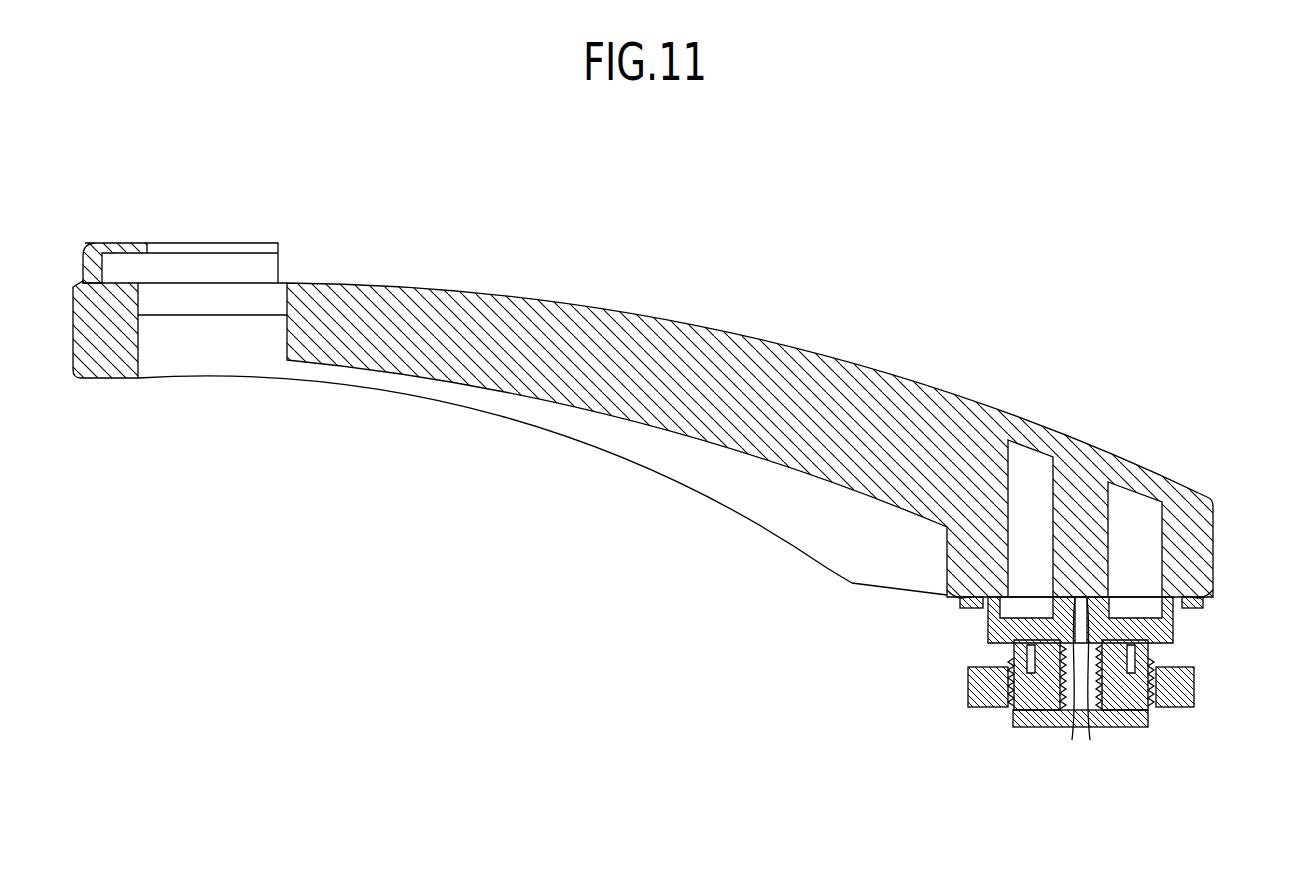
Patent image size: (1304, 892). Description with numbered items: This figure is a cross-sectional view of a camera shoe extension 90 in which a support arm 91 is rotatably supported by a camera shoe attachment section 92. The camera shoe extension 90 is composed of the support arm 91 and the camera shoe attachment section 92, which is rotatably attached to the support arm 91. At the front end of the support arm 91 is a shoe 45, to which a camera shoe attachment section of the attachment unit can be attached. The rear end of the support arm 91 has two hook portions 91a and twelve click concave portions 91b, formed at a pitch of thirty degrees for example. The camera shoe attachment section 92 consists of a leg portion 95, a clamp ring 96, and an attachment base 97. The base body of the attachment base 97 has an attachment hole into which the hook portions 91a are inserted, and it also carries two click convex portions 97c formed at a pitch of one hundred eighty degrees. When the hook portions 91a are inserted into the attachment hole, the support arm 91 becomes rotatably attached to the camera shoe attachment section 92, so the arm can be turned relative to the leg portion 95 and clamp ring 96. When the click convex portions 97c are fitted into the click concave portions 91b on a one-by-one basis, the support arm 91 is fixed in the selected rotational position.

The shoe 45 is at (133, 243).
The camera shoe extension 90 is at (618, 300).
The support arm 91 is at (707, 350).
The hook portion 91a is at (1081, 728).
The click concave portion 91b is at (972, 592).
The camera shoe attachment section 92 is at (1003, 664).
The leg portion 95 is at (1130, 727).
The clamp ring 96 is at (1194, 688).
The attachment base 97 is at (1172, 637).
The click convex portion 97c is at (972, 605).